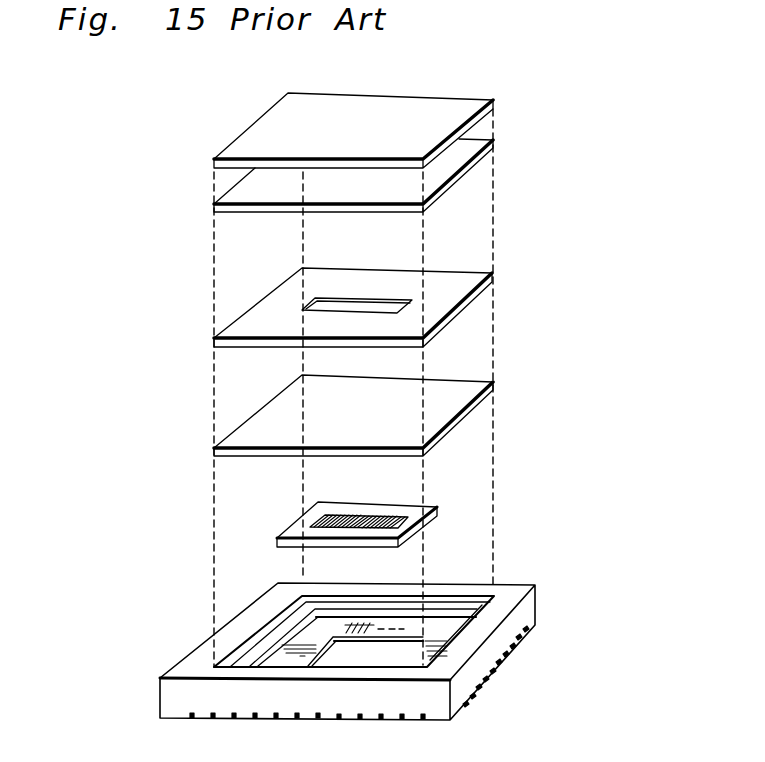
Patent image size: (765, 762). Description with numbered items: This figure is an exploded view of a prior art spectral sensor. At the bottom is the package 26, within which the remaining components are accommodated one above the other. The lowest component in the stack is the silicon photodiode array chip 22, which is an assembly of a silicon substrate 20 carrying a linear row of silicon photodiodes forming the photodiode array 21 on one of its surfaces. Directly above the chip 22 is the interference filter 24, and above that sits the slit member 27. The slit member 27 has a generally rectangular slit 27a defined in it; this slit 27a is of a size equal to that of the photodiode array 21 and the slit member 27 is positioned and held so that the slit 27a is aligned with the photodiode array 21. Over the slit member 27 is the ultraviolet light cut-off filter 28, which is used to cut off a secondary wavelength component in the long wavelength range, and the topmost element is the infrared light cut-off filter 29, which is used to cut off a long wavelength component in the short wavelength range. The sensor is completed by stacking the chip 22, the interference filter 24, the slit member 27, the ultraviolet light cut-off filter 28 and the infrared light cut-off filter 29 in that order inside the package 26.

The infrared light cut-off filter 29 is at (465, 103).
The ultraviolet light cut-off filter 28 is at (470, 147).
The slit member 27 is at (357, 275).
The rectangular slit 27a is at (322, 310).
The interference filter 24 is at (462, 389).
The silicon photodiode array chip 22 is at (361, 480).
The silicon substrate 20 is at (440, 512).
The photodiode array 21 is at (313, 520).
The package 26 is at (510, 592).